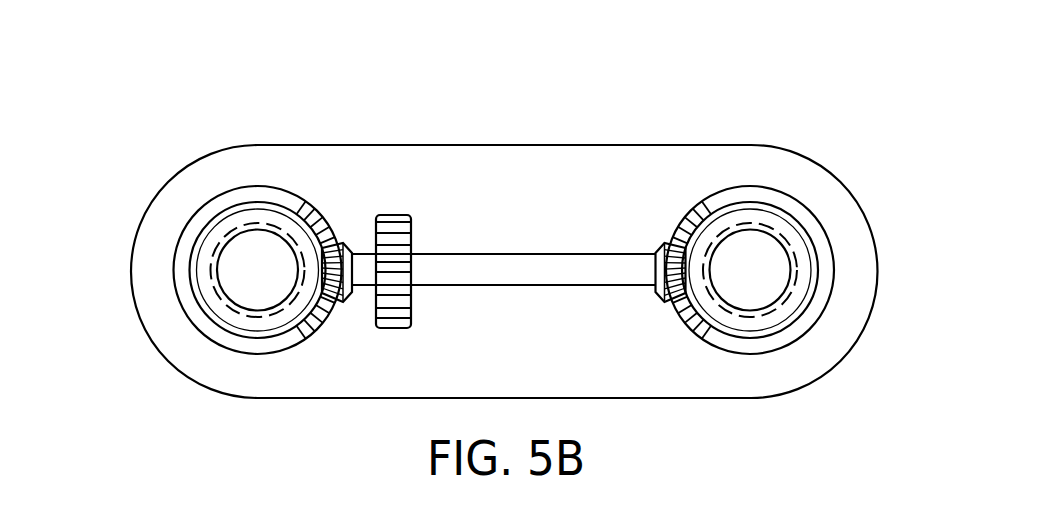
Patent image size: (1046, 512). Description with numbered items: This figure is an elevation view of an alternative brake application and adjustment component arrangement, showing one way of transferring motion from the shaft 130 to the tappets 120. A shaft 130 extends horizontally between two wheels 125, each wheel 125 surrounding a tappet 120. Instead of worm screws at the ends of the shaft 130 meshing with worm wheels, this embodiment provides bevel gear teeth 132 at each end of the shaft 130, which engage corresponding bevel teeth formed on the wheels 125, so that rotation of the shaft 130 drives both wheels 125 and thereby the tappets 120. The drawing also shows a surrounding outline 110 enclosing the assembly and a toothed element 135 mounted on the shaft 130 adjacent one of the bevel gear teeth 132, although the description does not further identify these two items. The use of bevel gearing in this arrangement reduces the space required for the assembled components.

The housing 110 is at (744, 105).
The tappet 120 is at (232, 270).
The wheel 125 is at (177, 295).
The shaft 130 is at (502, 253).
The bevel gear teeth 132 is at (343, 243).
The drive gear 135 is at (393, 215).